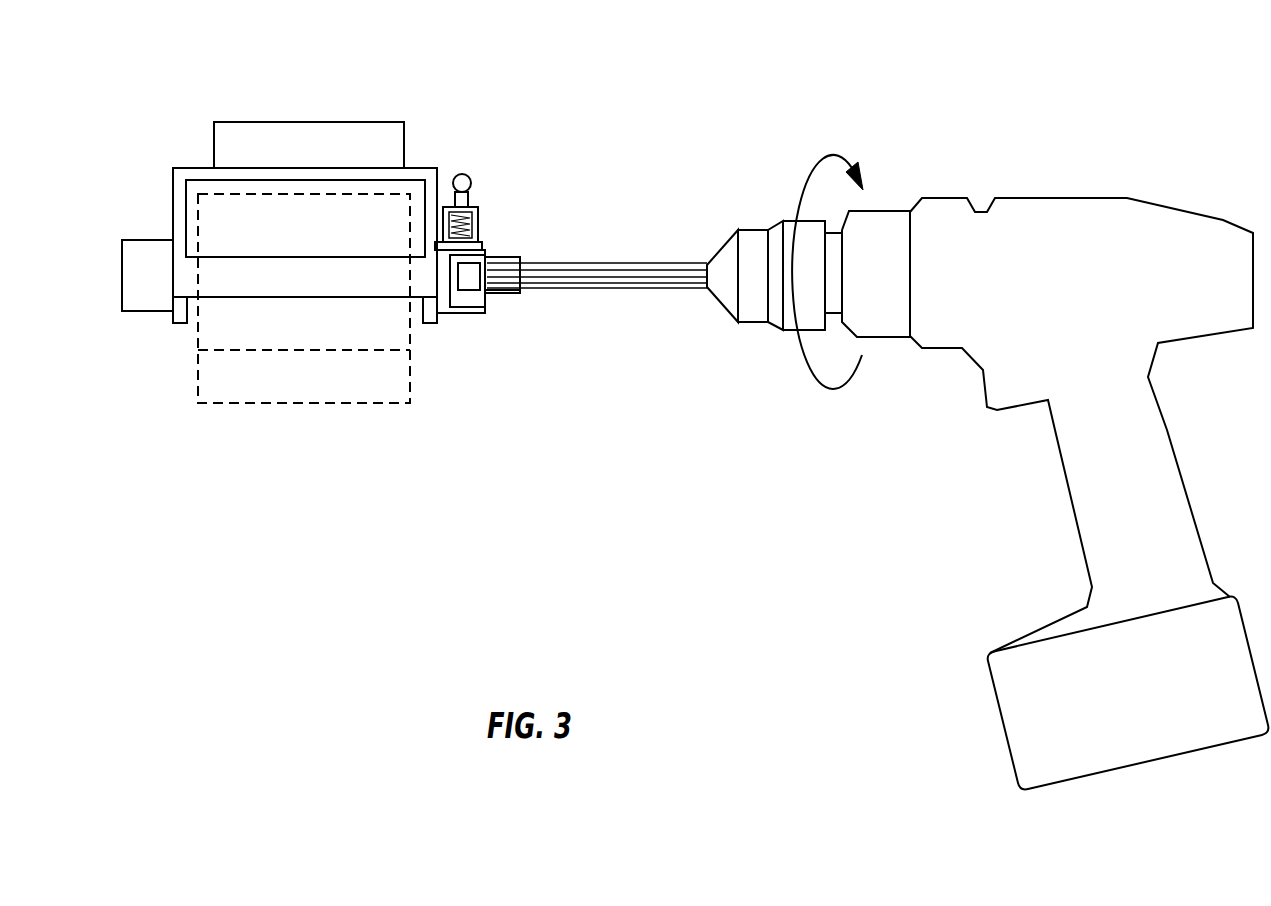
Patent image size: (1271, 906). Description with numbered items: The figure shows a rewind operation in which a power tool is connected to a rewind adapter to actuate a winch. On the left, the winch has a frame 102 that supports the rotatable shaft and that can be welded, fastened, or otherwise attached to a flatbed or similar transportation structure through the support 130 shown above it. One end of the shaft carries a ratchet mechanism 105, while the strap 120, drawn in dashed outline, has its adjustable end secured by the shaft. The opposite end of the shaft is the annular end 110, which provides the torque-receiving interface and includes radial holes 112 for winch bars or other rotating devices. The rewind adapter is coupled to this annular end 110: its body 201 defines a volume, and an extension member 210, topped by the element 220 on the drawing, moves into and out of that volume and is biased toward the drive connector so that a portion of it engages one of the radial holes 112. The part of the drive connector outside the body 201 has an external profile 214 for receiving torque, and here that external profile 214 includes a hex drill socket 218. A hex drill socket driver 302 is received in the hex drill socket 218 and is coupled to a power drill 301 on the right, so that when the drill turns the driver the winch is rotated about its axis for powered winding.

The frame 102 is at (197, 167).
The ratchet mechanism 105 is at (145, 240).
The annular end 110 is at (455, 312).
The radial holes 112 is at (483, 240).
The strap 120 is at (215, 328).
The support 130 is at (317, 122).
The body 201 is at (494, 249).
The extension member 210 is at (470, 198).
The external profile 214 is at (518, 298).
The hex drill socket 218 is at (521, 268).
The knob 220 is at (462, 174).
The power drill 301 is at (1067, 225).
The hex drill socket driver 302 is at (580, 290).